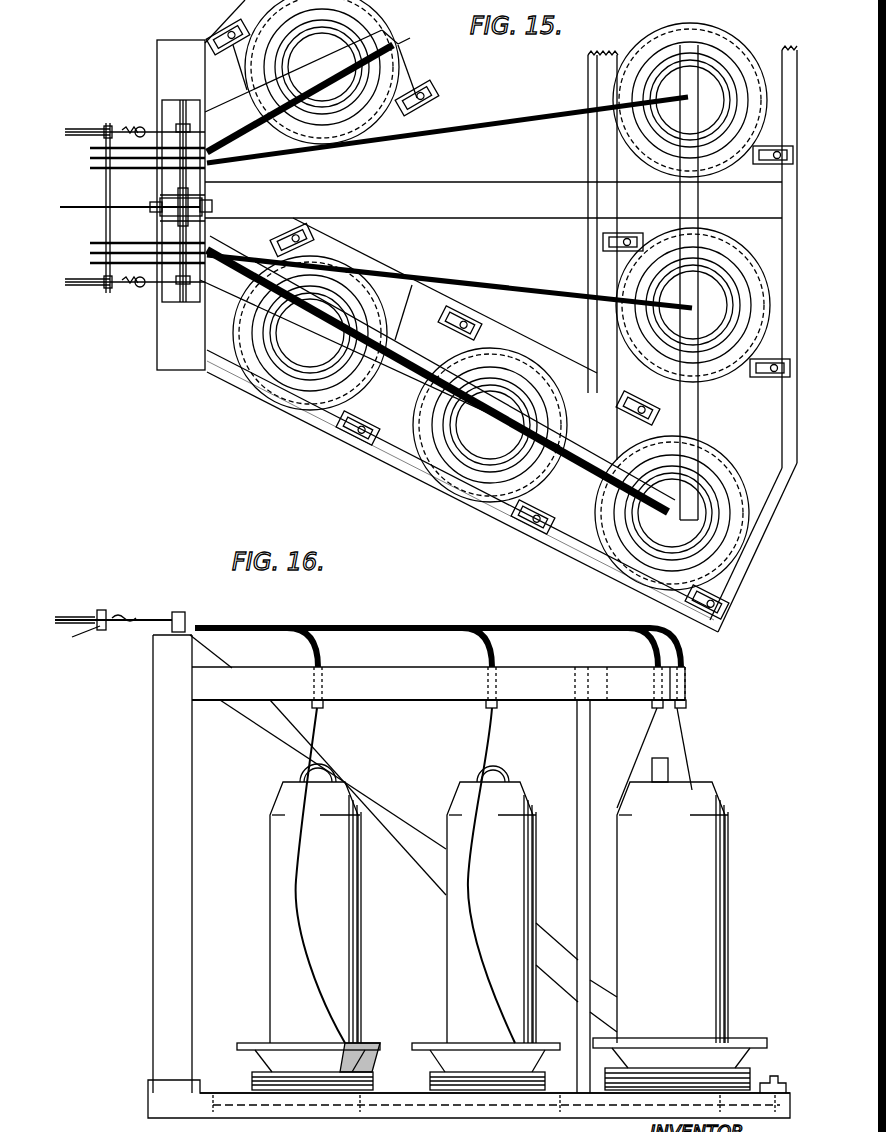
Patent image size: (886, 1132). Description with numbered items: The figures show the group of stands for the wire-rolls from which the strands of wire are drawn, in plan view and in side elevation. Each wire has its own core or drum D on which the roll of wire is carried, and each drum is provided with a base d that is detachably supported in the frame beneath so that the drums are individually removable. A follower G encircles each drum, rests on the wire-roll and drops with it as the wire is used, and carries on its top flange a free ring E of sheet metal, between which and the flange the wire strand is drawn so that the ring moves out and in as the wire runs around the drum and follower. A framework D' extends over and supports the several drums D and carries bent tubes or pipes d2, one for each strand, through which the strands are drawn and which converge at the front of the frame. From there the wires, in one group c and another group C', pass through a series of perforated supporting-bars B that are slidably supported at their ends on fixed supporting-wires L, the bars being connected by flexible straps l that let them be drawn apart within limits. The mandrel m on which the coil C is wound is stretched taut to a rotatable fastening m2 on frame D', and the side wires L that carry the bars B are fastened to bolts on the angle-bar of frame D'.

In FIG. 15, the fixed supporting-wires L is at (126, 215).
In FIG. 16, the fixed supporting-wires L is at (113, 607).
In FIG. 15, the coil C is at (126, 162).
In FIG. 15, the wire group C' is at (126, 254).
In FIG. 15, the mandrel m is at (100, 201).
In FIG. 15, the rotatable fastening m2 is at (205, 205).
In FIG. 15, the supporting-bars B is at (106, 228).
In FIG. 16, the supporting-bars B is at (107, 617).
In FIG. 15, the framework D' is at (452, 316).
In FIG. 16, the framework D' is at (453, 876).
In FIG. 15, the core or drum D is at (501, 301).
In FIG. 16, the core or drum D is at (499, 875).
In FIG. 15, the free ring E is at (300, 417).
In FIG. 16, the free ring E is at (408, 1043).
In FIG. 15, the base d is at (232, 372).
In FIG. 16, the base d is at (240, 1057).
In FIG. 15, the bent tubes or pipes d2 is at (398, 50).
In FIG. 16, the bent tubes or pipes d2 is at (454, 628).
In FIG. 16, the flexible straps l is at (80, 645).
In FIG. 16, the follower G is at (440, 1058).